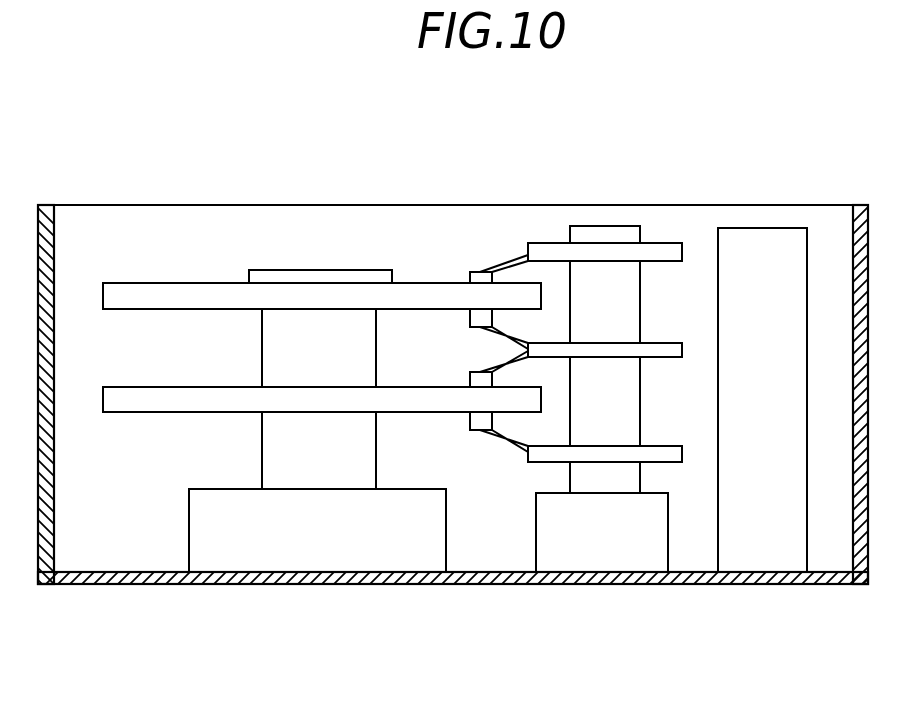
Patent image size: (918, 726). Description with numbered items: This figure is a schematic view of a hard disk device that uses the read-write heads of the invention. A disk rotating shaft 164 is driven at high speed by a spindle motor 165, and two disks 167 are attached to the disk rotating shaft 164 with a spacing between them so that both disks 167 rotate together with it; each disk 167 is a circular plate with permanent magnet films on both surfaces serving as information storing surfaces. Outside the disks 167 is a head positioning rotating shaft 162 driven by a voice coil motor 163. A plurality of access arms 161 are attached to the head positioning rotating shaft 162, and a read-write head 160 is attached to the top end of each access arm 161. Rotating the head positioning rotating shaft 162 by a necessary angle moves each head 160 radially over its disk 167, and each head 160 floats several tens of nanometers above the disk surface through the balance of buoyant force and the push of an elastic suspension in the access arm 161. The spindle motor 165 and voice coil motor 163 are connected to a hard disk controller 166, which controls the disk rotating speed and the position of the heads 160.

The read-write head 160 is at (475, 278).
The access arm 161 is at (545, 252).
The head positioning rotating shaft 162 is at (617, 235).
The voice coil motor 163 is at (602, 562).
The disk rotating shaft 164 is at (318, 475).
The spindle motor 165 is at (380, 558).
The hard disk controller 166 is at (765, 235).
The disk 167 is at (207, 297).